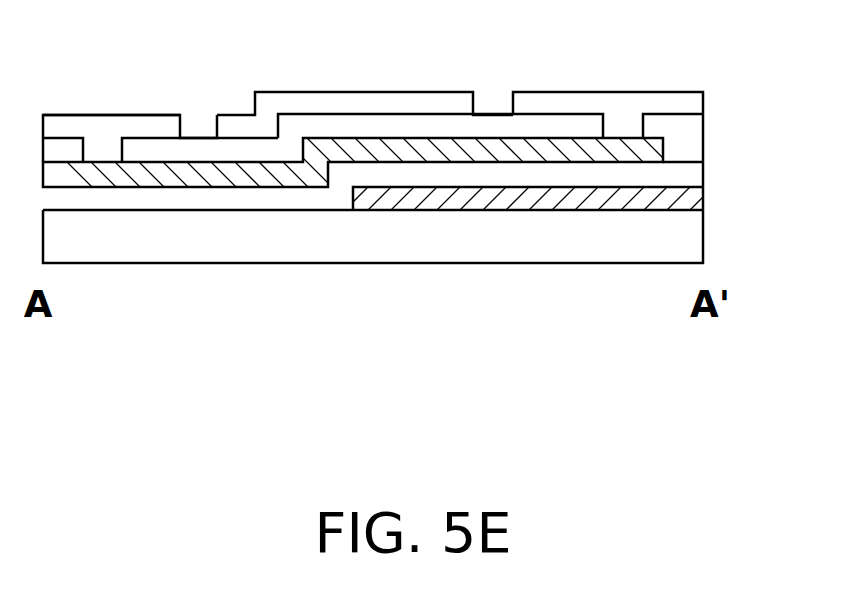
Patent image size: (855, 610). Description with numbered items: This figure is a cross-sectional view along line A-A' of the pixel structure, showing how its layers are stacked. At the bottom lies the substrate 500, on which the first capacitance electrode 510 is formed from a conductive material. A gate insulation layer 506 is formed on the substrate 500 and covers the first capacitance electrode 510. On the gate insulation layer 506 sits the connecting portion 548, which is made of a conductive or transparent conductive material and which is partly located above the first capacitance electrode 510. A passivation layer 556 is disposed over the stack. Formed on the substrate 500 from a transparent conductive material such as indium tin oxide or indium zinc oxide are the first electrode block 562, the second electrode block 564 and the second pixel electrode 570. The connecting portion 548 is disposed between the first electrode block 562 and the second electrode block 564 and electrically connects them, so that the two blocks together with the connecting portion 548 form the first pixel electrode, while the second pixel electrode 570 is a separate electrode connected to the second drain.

The substrate 500 is at (673, 239).
The first capacitance electrode 510 is at (687, 197).
The gate insulation layer 506 is at (685, 175).
The connecting portion 548 is at (660, 156).
The passivation layer 556 is at (683, 125).
The second electrode block 564 is at (153, 127).
The second pixel electrode 570 is at (368, 107).
The first electrode block 562 is at (583, 105).